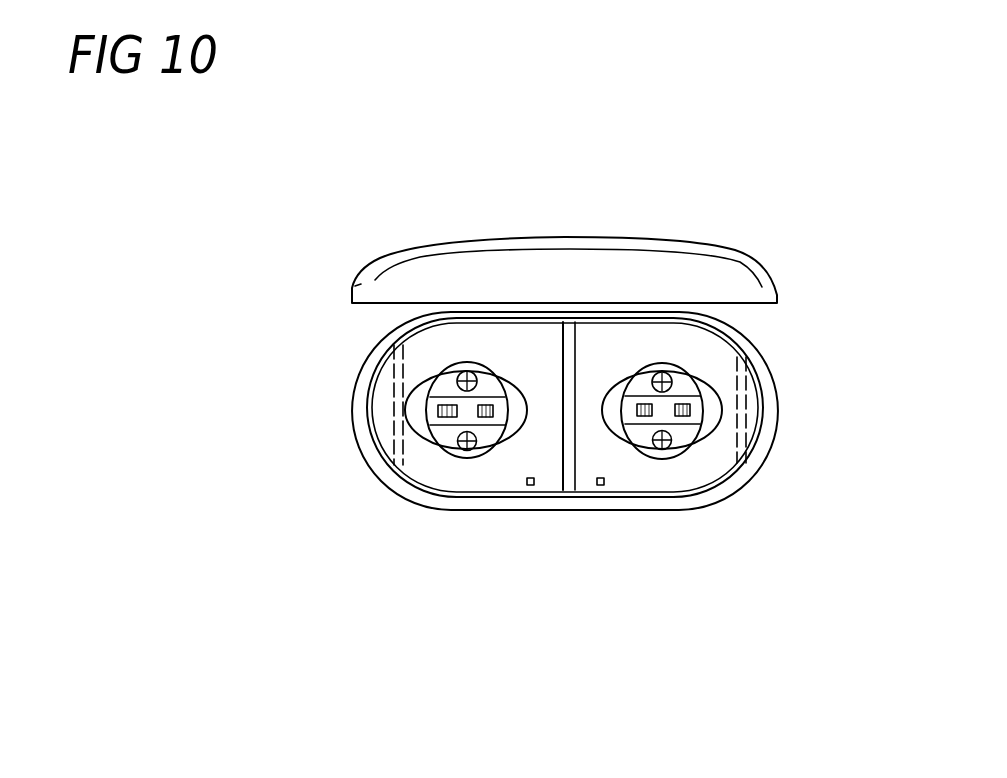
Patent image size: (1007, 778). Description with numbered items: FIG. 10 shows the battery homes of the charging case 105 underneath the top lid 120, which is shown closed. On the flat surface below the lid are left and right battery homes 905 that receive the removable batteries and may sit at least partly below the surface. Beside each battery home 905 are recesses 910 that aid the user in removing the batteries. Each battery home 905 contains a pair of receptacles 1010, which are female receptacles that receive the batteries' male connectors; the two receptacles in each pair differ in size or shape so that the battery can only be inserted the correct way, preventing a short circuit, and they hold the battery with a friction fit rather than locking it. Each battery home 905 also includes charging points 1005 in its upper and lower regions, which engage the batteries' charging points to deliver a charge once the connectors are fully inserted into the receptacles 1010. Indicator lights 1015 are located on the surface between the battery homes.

The charging case 105 is at (772, 155).
The top lid 120 is at (693, 245).
The battery home 905 is at (658, 355).
The recess 910 is at (502, 448).
The charging point 1005 is at (803, 344).
The receptacle 1010 is at (805, 450).
The indicator light 1015 is at (600, 487).